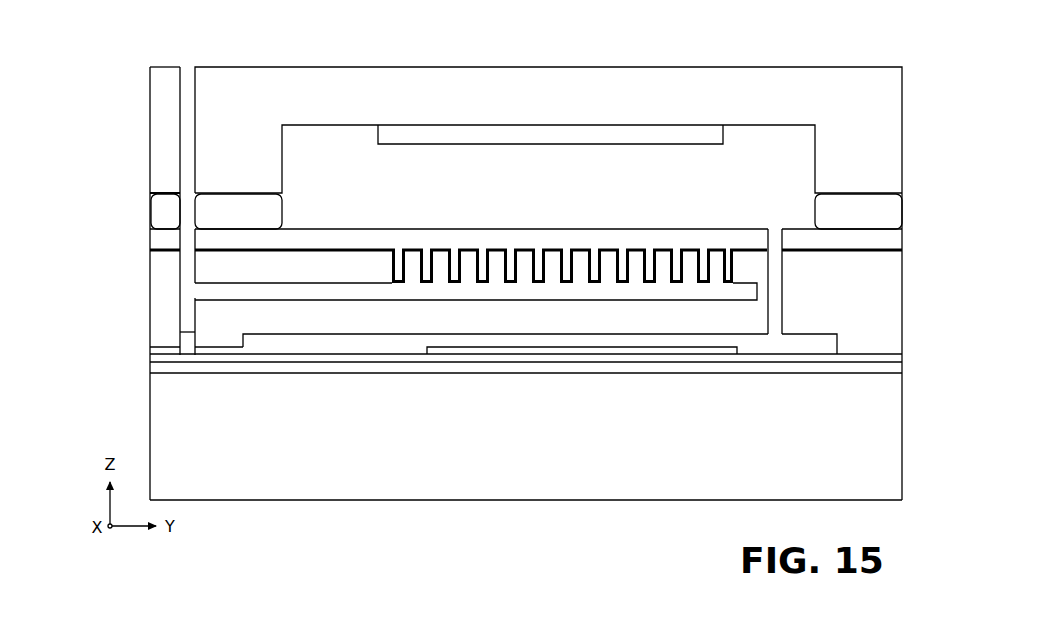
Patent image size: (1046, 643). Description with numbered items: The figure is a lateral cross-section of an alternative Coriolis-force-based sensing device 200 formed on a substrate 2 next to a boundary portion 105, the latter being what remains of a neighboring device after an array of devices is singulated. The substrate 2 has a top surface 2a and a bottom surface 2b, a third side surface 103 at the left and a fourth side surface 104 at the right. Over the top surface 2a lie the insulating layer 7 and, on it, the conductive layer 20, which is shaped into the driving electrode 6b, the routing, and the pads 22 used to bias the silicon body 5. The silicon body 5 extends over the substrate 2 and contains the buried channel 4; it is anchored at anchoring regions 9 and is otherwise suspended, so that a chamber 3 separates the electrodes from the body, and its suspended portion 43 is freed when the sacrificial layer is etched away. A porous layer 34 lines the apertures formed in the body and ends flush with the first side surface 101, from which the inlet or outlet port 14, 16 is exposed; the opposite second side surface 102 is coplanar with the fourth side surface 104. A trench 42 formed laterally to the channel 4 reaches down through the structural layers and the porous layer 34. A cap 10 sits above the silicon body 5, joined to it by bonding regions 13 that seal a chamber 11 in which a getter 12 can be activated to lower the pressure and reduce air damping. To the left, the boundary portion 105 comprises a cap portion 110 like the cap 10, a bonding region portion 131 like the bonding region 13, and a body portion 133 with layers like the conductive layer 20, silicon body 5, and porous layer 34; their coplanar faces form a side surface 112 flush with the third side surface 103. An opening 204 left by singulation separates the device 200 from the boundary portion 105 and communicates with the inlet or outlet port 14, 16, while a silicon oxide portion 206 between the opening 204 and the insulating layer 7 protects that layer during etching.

The Coriolis-force-based sensing device 200 is at (466, 57).
The cap 10 is at (378, 84).
The chamber 11 is at (311, 158).
The getter 12 is at (470, 135).
The bonding regions 13 is at (230, 211).
The bonding region portion 131 is at (158, 211).
The body portion 133 is at (188, 251).
The boundary portion 105 is at (135, 73).
The cap portion 110 is at (160, 118).
The opening 204 is at (190, 64).
The silicon oxide portion 206 is at (186, 343).
The first side surface 101 is at (163, 260).
The second side surface 102 is at (908, 289).
The third side surface 103 is at (147, 432).
The fourth side surface 104 is at (909, 414).
The side surface 112 is at (147, 293).
The silicon body 5 is at (552, 225).
The porous layer 34 is at (654, 246).
The trench 42 is at (776, 230).
The suspended portion 43 is at (376, 266).
The channel 4 is at (741, 292).
The inlet port 14 is at (419, 273).
The outlet port 16 is at (191, 292).
The chamber 3 is at (806, 345).
The anchoring regions 9 is at (219, 334).
The conductive layer 20 is at (487, 382).
The pads 22 is at (218, 350).
The driving electrode 6b is at (650, 350).
The insulating layer 7 is at (904, 352).
The substrate 2 is at (890, 444).
The top surface 2a is at (293, 369).
The bottom surface 2b is at (334, 503).